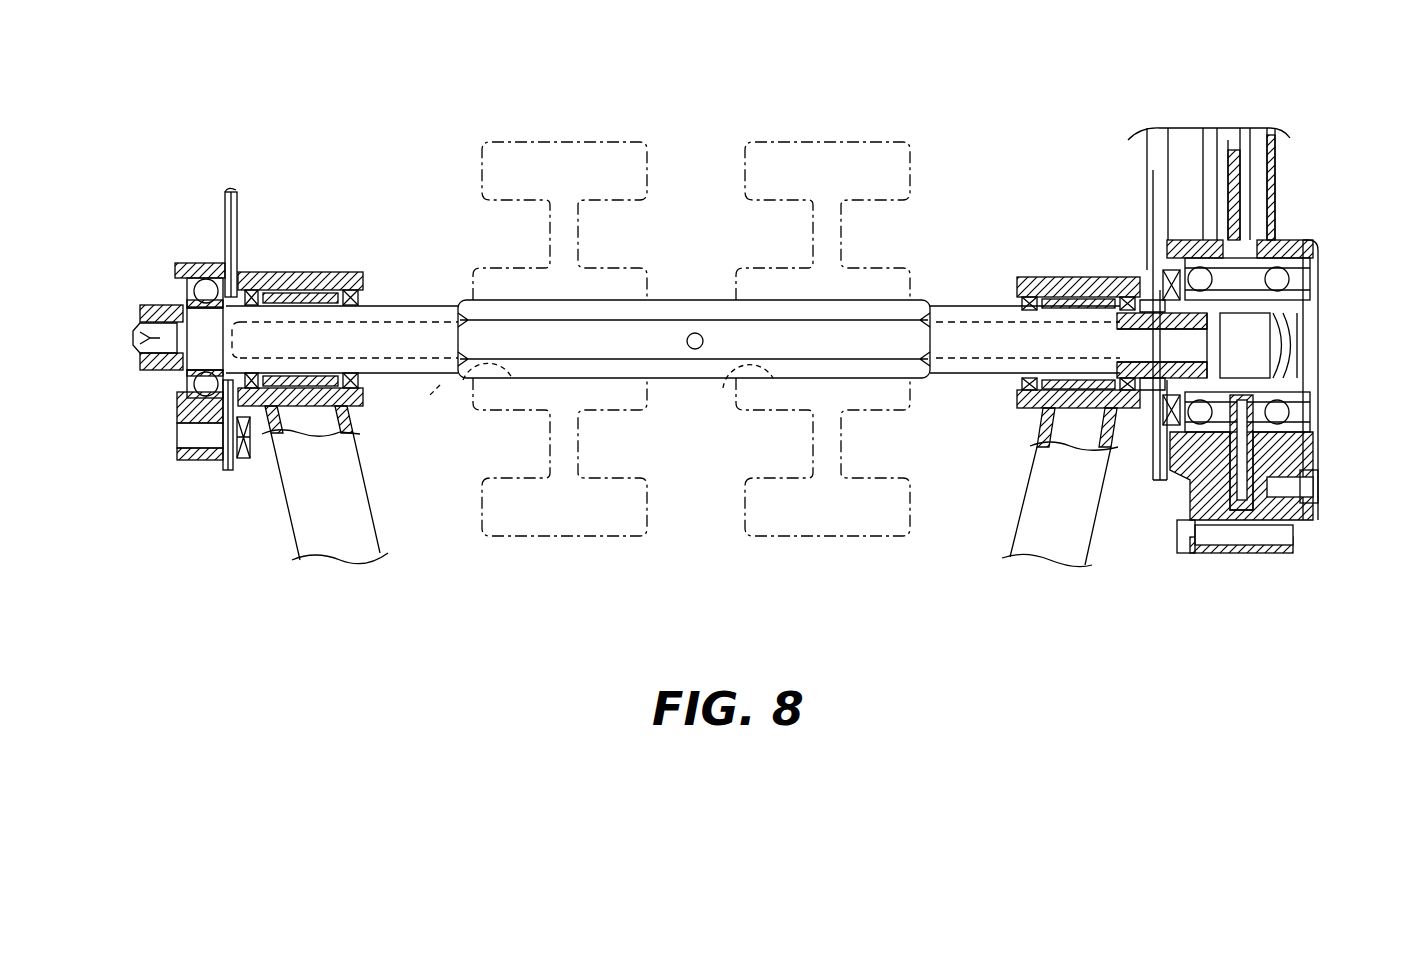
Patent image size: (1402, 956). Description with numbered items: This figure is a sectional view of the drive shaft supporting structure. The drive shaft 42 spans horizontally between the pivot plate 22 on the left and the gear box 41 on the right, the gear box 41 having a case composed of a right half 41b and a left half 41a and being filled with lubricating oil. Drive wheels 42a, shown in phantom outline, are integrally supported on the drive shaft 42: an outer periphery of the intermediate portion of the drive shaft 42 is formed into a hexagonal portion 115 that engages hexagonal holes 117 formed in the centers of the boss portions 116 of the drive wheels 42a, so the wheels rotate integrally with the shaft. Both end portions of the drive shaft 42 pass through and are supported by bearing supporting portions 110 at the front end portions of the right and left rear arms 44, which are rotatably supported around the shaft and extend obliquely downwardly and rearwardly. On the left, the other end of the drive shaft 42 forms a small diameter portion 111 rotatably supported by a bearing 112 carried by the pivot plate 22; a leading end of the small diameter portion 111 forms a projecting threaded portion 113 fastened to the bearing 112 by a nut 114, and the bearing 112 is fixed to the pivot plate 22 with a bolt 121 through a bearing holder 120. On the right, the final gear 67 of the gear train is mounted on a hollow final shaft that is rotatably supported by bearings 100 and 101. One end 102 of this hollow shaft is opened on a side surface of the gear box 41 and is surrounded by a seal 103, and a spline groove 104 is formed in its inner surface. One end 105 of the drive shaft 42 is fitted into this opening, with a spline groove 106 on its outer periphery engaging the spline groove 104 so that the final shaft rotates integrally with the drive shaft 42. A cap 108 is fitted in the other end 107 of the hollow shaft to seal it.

The pivot plate 22 is at (225, 215).
The gear box 41 is at (1300, 162).
The left half 41a is at (1210, 555).
The right half 41b is at (1262, 540).
The drive shaft 42 is at (436, 272).
The drive wheels 42a is at (575, 528).
The rear arms 44 is at (355, 500).
The final gear 67 is at (1245, 200).
The bearing 100 is at (1158, 265).
The bearing 101 is at (1318, 268).
The one end 102 is at (1148, 300).
The seal 103 is at (1170, 280).
The spline groove 104 is at (1225, 315).
The one end 105 is at (1125, 345).
The spline groove 106 is at (1192, 325).
The other end 107 is at (1270, 303).
The cap 108 is at (1298, 350).
The bearing supporting portions 110 is at (302, 272).
The small diameter portion 111 is at (205, 348).
The bearing 112 is at (205, 288).
The projecting threaded portion 113 is at (148, 345).
The nut 114 is at (150, 310).
The hexagonal portion 115 is at (690, 300).
The boss portions 116 is at (478, 410).
The hexagonal holes 117 is at (465, 385).
The bearing holder 120 is at (205, 460).
The bolt 121 is at (178, 435).